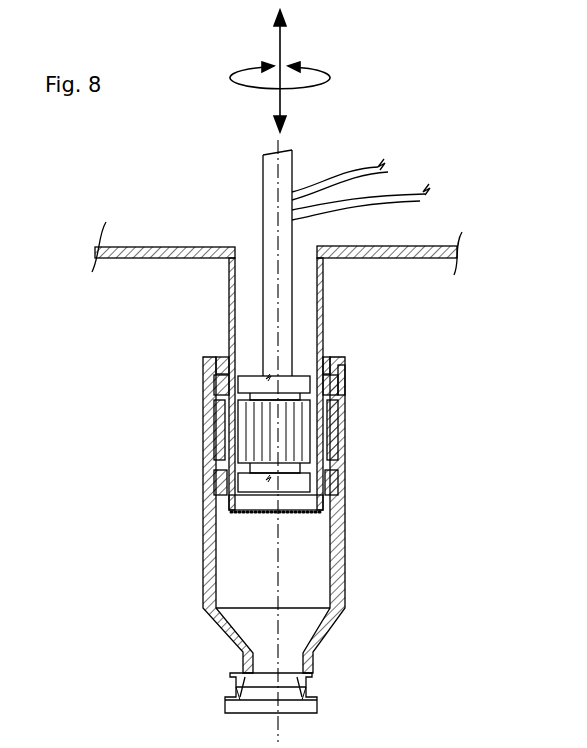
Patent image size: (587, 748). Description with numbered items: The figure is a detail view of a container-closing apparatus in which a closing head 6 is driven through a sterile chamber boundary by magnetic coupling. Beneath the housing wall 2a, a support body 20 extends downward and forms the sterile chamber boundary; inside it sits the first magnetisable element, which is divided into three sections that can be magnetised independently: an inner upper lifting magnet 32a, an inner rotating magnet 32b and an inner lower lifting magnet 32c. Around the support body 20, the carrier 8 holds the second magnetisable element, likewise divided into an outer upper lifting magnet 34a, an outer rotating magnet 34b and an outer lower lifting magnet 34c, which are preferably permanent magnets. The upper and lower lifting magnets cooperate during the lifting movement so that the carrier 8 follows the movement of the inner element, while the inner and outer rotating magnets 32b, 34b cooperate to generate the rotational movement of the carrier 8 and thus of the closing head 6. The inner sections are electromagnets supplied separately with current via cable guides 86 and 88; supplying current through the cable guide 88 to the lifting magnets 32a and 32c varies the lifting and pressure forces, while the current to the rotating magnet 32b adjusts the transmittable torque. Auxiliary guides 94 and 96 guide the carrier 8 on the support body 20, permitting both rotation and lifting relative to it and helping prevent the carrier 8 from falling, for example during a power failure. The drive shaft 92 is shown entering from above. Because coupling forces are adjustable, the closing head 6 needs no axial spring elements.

The housing wall 2a is at (140, 247).
The support body 20 is at (228, 289).
The outer upper lifting magnet 34a is at (212, 380).
The outer rotating magnet 34b is at (208, 422).
The outer lower lifting magnet 34c is at (208, 481).
The inner upper lifting magnet 32a is at (297, 382).
The inner rotating magnet 32b is at (282, 418).
The inner lower lifting magnet 32c is at (338, 538).
The auxiliary guide 94 is at (340, 380).
The auxiliary guide 96 is at (297, 480).
The carrier 8 is at (335, 568).
The closing head 6 is at (317, 710).
The drive shaft 92 is at (270, 290).
The cable guide 88 is at (395, 160).
The cable guide 86 is at (440, 185).